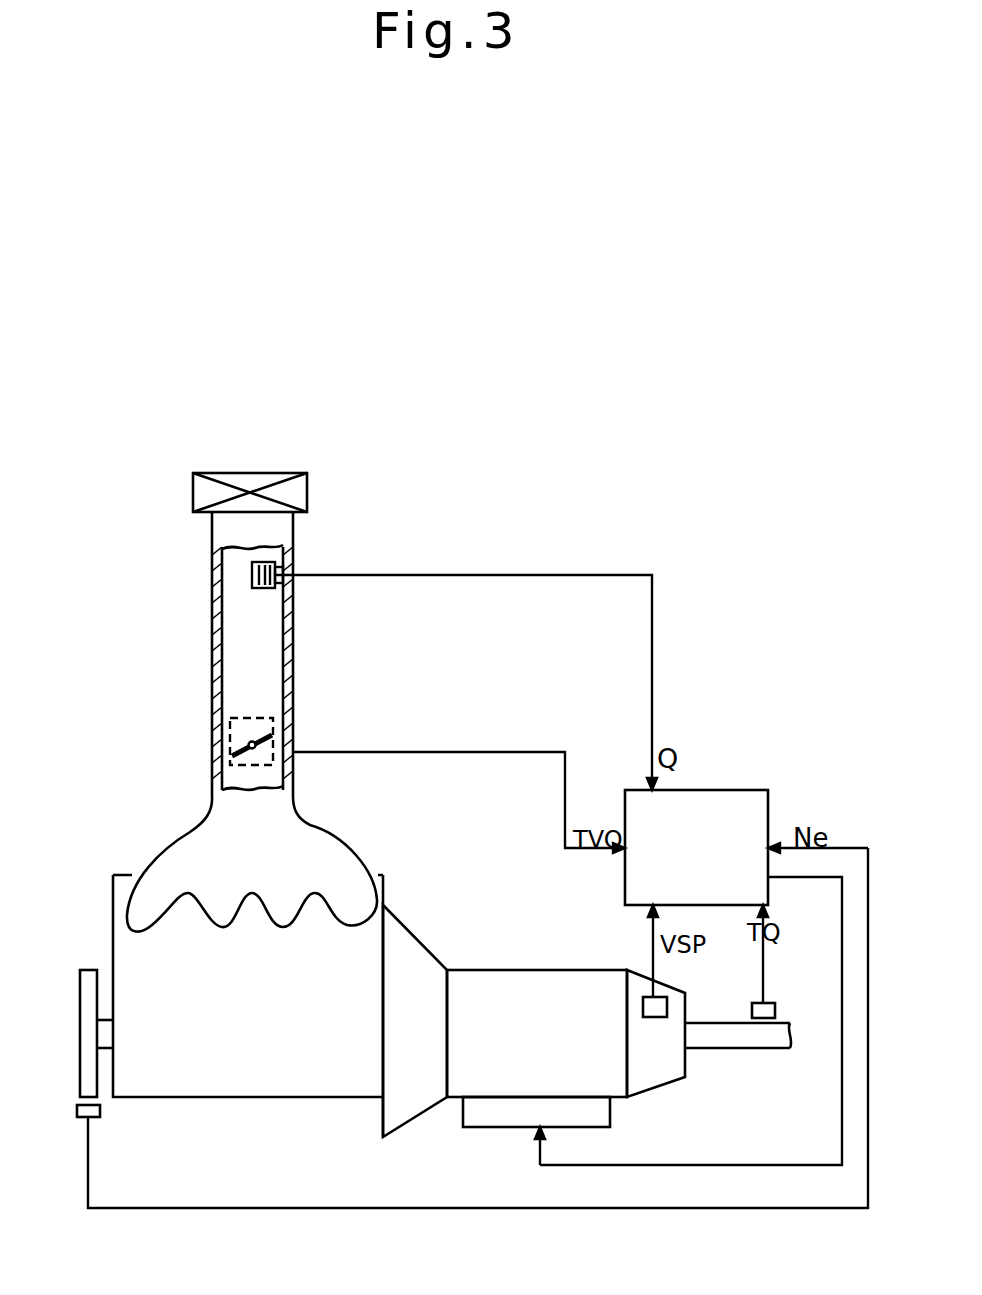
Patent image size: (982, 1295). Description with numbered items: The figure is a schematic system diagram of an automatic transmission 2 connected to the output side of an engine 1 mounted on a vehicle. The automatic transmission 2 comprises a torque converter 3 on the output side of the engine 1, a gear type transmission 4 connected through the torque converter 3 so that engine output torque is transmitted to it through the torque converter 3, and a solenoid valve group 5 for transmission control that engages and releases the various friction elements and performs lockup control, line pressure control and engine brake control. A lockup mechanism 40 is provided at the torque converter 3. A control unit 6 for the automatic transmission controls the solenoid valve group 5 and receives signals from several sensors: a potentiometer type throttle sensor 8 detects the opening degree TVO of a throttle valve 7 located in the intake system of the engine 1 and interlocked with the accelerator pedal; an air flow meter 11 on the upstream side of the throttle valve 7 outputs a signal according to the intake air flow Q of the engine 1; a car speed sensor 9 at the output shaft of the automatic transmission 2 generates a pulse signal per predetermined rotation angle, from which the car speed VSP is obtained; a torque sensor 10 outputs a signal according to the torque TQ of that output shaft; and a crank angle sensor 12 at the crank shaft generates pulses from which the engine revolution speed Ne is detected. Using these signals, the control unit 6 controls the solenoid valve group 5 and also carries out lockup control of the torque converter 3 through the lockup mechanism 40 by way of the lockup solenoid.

The engine 1 is at (381, 858).
The automatic transmission 2 is at (619, 986).
The torque converter 3 is at (422, 1036).
The lockup mechanism 40 is at (416, 1084).
The gear type transmission 4 is at (535, 1049).
The solenoid valve group 5 is at (603, 1112).
The control unit 6 is at (745, 790).
The throttle valve 7 is at (230, 752).
The throttle sensor 8 is at (273, 720).
The car speed sensor 9 is at (667, 1010).
The torque sensor 10 is at (775, 1010).
The air flow meter 11 is at (265, 588).
The crank angle sensor 12 is at (100, 1110).